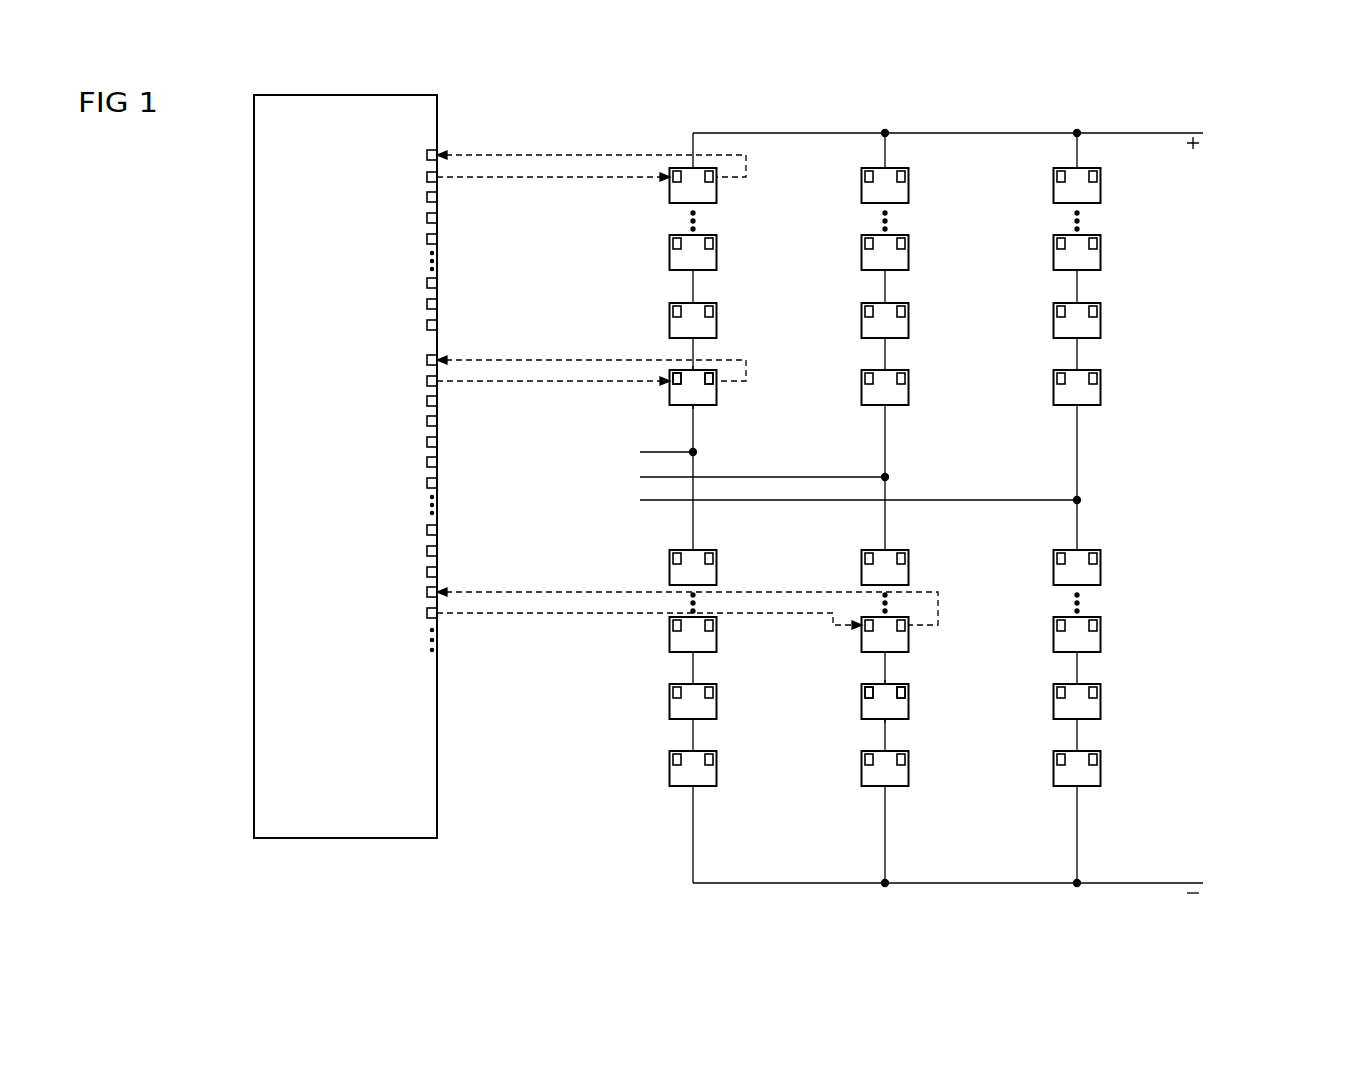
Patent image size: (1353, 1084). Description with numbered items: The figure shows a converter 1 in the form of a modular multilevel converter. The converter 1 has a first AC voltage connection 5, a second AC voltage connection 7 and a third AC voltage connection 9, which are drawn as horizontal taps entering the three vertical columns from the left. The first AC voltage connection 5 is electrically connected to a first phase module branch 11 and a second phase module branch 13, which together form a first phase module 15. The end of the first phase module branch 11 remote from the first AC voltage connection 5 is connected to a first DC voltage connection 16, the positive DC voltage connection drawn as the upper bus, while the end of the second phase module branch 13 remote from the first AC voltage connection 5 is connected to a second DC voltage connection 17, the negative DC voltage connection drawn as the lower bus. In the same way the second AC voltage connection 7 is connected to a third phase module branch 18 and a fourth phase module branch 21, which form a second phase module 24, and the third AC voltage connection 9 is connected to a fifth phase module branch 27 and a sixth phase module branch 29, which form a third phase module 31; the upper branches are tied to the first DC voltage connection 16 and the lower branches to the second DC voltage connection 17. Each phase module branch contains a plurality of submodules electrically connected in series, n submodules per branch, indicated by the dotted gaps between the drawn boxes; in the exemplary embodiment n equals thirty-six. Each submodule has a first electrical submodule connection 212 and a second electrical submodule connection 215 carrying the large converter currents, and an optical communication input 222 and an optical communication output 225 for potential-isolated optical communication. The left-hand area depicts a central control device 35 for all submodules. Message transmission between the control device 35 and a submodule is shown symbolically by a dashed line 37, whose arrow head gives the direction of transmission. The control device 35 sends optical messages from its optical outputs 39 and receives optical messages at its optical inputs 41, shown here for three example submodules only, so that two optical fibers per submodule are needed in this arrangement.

The converter 1 is at (1280, 104).
The first DC voltage connection 16 is at (1183, 133).
The second DC voltage connection 17 is at (1182, 883).
The control device 35 is at (253, 456).
The dashed line 37 is at (504, 150).
The optical outputs 39 is at (427, 177).
The optical inputs 41 is at (427, 155).
The first phase module 15 is at (734, 890).
The second phase module 24 is at (926, 890).
The third phase module 31 is at (1118, 890).
The first AC voltage connection 5 is at (638, 452).
The second AC voltage connection 7 is at (638, 477).
The third AC voltage connection 9 is at (640, 500).
The first phase module branch 11 is at (674, 421).
The second phase module branch 13 is at (674, 810).
The third phase module branch 18 is at (866, 421).
The fourth phase module branch 21 is at (866, 810).
The fifth phase module branch 27 is at (1058, 421).
The sixth phase module branch 29 is at (1058, 810).
The first electrical submodule connection 212 is at (689, 369).
The second electrical submodule connection 215 is at (695, 406).
The optical communication input 222 is at (674, 386).
The optical communication output 225 is at (716, 380).